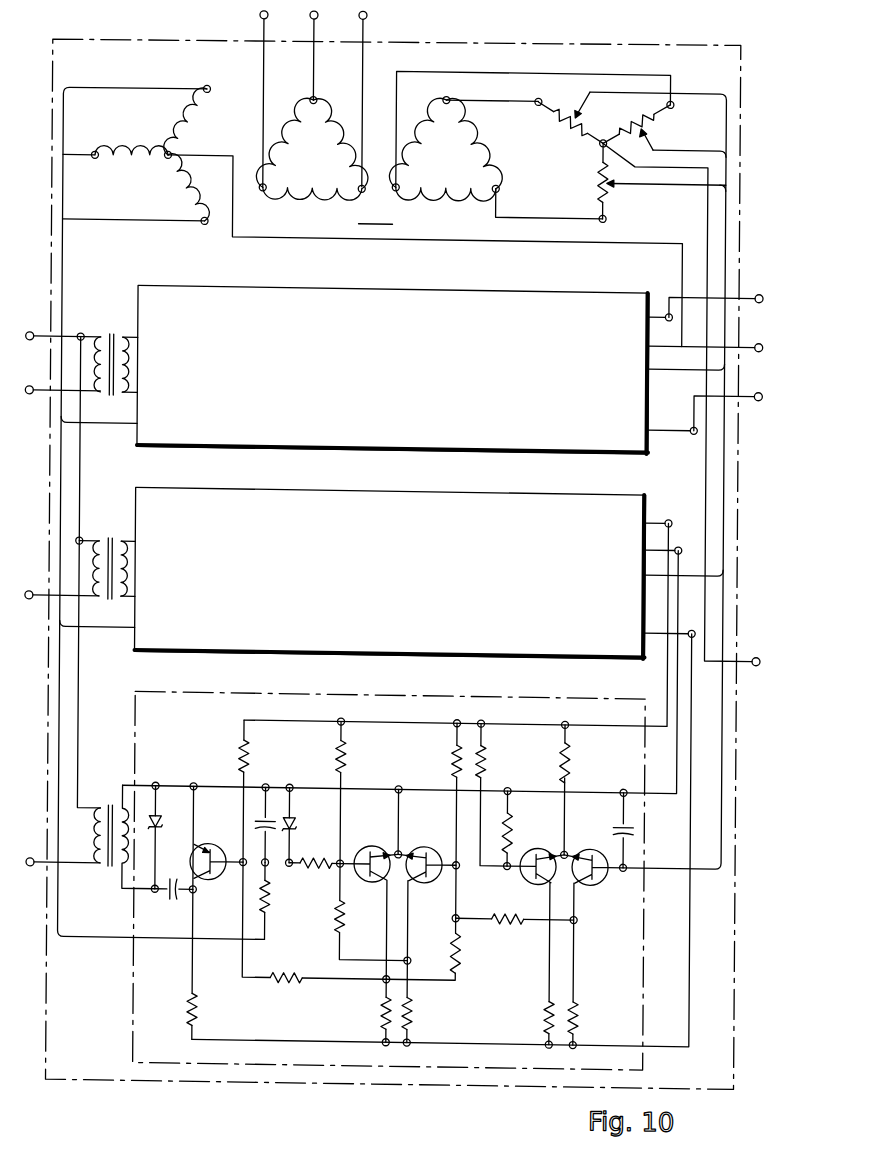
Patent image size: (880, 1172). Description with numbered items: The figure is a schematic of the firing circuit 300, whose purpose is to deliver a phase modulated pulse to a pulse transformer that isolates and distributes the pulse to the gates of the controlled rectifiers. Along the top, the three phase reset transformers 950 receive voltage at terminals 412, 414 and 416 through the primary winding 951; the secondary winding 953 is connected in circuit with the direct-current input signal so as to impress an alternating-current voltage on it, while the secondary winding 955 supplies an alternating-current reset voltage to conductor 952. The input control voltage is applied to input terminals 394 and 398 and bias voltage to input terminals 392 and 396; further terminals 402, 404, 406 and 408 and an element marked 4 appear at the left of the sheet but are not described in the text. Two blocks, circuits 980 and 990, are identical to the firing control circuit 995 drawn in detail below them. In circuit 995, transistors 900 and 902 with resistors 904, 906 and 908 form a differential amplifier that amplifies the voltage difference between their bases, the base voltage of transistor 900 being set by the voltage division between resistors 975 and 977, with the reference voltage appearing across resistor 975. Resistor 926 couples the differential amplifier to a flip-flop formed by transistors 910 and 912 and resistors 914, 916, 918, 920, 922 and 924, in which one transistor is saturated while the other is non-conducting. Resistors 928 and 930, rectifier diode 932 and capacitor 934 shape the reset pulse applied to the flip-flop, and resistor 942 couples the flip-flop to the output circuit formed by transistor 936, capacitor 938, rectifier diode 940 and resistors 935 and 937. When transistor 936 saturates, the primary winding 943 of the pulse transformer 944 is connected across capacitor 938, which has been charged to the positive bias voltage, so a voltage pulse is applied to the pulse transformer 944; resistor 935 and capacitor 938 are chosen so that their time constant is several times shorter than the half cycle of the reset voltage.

The firing circuit 300 is at (373, 1087).
The input terminal 412 is at (256, 18).
The input terminal 414 is at (307, 19).
The input terminal 416 is at (363, 18).
The secondary winding 955 is at (178, 133).
The primary winding 951 is at (309, 185).
The secondary winding 953 is at (512, 164).
The reset transformers 950 is at (375, 214).
The conductor 952 is at (118, 944).
The input terminal 392 is at (756, 290).
The input terminal 394 is at (756, 339).
The input terminal 396 is at (756, 388).
The input terminal 398 is at (756, 653).
The circuit 980 is at (432, 289).
The circuit 990 is at (432, 491).
The firing control circuit 995 is at (432, 695).
The input terminal 402 is at (28, 338).
The isolating transformer 4 is at (77, 364).
The input terminal 404 is at (28, 400).
The input terminal 406 is at (29, 597).
The input terminal 408 is at (32, 864).
The pulse transformer 944 is at (108, 811).
The primary winding 943 is at (112, 870).
The rectifier diode 940 is at (162, 822).
The capacitor 938 is at (175, 903).
The transistor 936 is at (212, 847).
The resistor 937 is at (252, 759).
The capacitor 934 is at (258, 822).
The rectifier diode 932 is at (296, 820).
The resistor 928 is at (314, 860).
The resistor 930 is at (272, 900).
The resistor 914 is at (348, 760).
The resistor 918 is at (336, 914).
The transistor 910 is at (371, 847).
The transistor 912 is at (430, 847).
The resistor 916 is at (452, 766).
The resistor 920 is at (466, 953).
The resistor 926 is at (511, 926).
The resistor 977 is at (488, 760).
The resistor 975 is at (514, 822).
The transistor 900 is at (527, 880).
The transistor 902 is at (600, 882).
The resistor 904 is at (572, 760).
The resistor 942 is at (291, 979).
The resistor 935 is at (190, 1003).
The resistor 922 is at (380, 1012).
The resistor 924 is at (420, 1012).
The resistor 906 is at (542, 1014).
The resistor 908 is at (584, 1012).